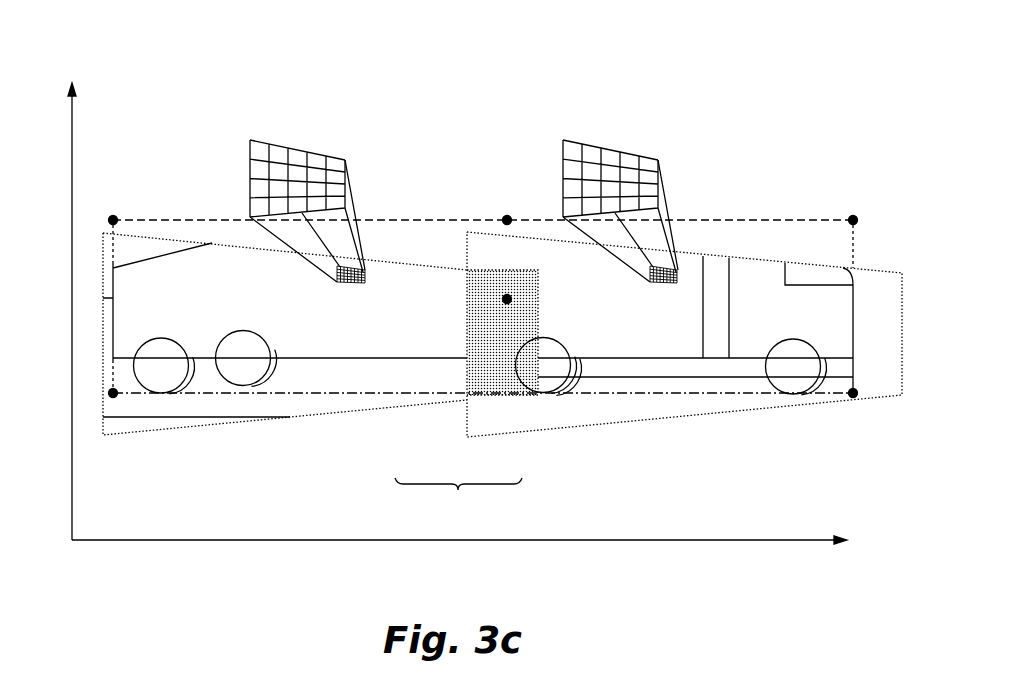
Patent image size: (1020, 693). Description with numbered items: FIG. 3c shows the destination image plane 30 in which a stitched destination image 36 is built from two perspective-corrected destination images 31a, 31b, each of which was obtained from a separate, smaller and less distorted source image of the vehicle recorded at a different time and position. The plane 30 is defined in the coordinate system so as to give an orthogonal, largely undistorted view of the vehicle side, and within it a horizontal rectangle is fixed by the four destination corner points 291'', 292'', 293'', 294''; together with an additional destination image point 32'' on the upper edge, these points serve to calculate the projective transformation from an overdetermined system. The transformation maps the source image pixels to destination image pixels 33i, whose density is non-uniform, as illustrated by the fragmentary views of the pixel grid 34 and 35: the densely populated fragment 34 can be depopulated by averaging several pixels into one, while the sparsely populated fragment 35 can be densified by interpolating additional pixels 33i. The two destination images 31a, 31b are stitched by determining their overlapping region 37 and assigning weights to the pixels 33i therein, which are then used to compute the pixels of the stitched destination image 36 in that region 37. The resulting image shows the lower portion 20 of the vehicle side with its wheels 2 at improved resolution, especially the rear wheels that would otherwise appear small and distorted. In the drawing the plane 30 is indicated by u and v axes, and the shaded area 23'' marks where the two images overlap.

The wheels 2 is at (167, 382).
The lower portion of the vehicle side 20 is at (478, 330).
The projection region / detector footprint 23'' is at (510, 320).
The destination corner point 291'' is at (435, 225).
The destination corner point 292'' is at (67, 402).
The destination corner point 293'' is at (873, 417).
The destination corner point 294'' is at (873, 221).
The destination 2D image plane 30 is at (469, 297).
The destination 2D image 31a is at (397, 408).
The destination 2D image 31b is at (517, 435).
The additional destination image point 32'' is at (488, 199).
The destination 2D image pixels 33i is at (334, 163).
The pixel grid fragment 34 is at (673, 286).
The pixel grid fragment 35 is at (360, 286).
The stitched destination 2D image 36 is at (458, 499).
The overlapping region 37 is at (487, 343).